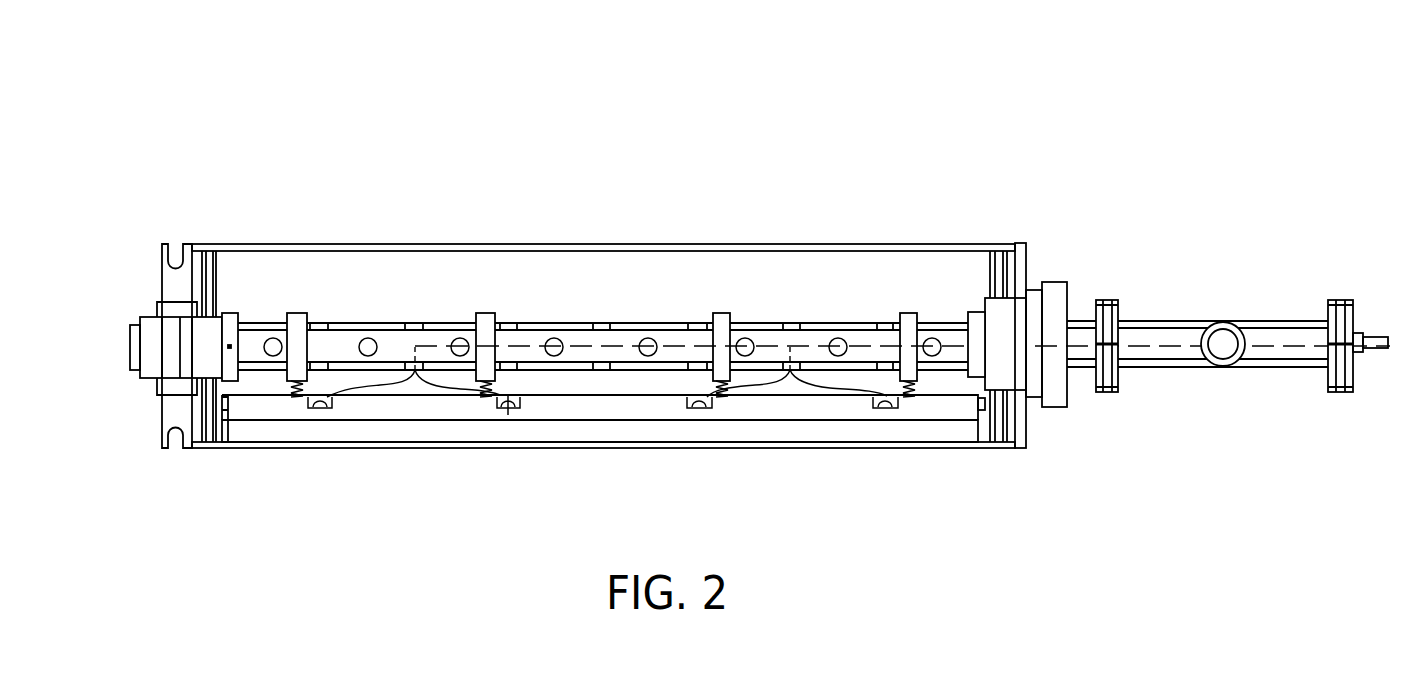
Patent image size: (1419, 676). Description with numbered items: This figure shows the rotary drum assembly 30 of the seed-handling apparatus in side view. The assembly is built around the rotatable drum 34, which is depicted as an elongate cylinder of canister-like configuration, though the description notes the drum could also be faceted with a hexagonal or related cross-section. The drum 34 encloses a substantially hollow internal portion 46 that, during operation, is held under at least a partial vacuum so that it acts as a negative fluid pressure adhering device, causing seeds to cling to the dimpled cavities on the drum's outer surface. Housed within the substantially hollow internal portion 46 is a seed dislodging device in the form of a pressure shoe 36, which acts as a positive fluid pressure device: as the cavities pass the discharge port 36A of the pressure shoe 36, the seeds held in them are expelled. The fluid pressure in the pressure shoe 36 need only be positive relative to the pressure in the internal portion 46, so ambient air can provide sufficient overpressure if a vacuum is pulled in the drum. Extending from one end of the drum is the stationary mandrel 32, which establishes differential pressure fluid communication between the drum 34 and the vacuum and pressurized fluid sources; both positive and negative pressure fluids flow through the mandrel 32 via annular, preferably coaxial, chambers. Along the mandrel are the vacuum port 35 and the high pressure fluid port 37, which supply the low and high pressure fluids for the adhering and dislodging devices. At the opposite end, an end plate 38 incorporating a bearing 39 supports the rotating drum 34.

The rotary drum assembly 30 is at (1070, 110).
The stationary mandrel 32 is at (1163, 318).
The rotatable drum 34 is at (760, 449).
The vacuum port 35 is at (1225, 358).
The pressure shoe 36 is at (428, 420).
The discharge port 36A is at (320, 433).
The high pressure fluid port 37 is at (1383, 335).
The end plate 38 is at (170, 243).
The bearing 39 is at (156, 398).
The substantially hollow internal portion 46 is at (393, 268).